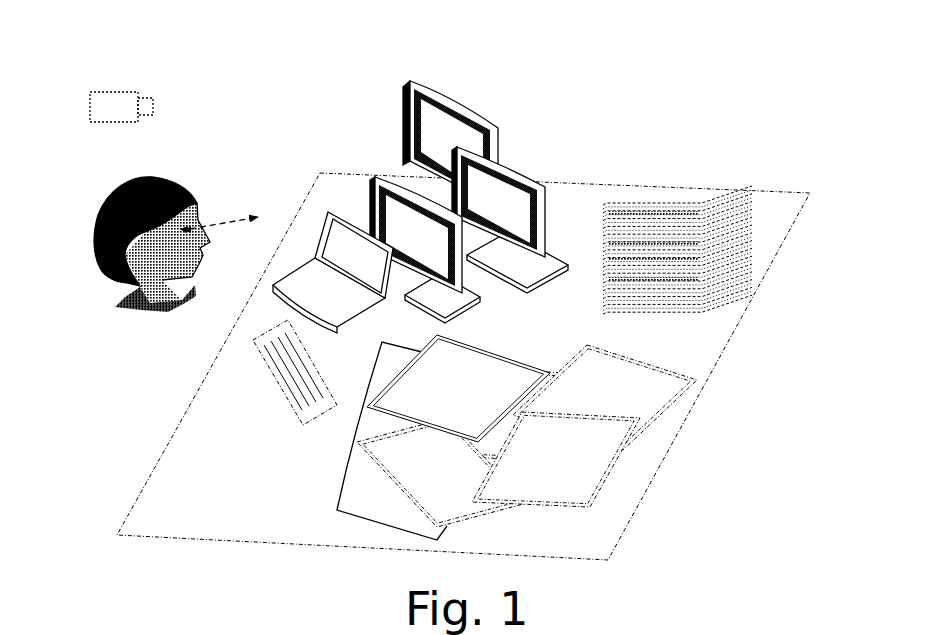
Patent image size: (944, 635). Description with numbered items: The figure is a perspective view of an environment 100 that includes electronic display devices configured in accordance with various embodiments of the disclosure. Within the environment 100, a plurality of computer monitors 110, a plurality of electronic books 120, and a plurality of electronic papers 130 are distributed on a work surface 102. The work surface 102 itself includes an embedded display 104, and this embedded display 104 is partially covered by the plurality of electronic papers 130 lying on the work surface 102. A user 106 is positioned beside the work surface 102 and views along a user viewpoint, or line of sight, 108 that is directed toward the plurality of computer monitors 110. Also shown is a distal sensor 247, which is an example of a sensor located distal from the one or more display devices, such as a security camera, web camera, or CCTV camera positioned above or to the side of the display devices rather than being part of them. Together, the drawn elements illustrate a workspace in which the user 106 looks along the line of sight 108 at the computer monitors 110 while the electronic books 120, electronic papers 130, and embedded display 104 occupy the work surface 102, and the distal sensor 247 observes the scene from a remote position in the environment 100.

The environment 100 is at (690, 85).
The work surface 102 is at (251, 514).
The embedded display 104 is at (345, 490).
The user 106 is at (131, 161).
The user viewpoint 108 is at (233, 220).
The computer monitors 110 is at (356, 106).
The electronic books 120 is at (742, 158).
The electronic papers 130 is at (690, 478).
The distal sensor 247 is at (119, 91).